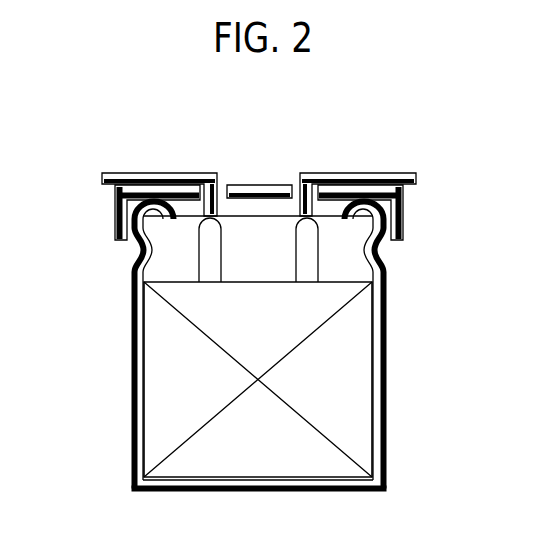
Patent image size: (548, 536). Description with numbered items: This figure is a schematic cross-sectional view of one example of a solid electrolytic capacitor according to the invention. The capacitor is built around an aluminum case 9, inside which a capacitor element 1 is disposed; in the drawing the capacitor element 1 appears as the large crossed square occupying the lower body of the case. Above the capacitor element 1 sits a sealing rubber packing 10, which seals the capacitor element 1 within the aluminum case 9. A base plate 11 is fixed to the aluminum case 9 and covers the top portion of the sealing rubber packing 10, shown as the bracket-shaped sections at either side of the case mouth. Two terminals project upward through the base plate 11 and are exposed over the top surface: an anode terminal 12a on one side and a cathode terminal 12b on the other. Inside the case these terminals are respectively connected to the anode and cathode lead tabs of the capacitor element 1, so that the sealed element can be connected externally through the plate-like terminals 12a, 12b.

The capacitor element 1 is at (168, 373).
The aluminum case 9 is at (381, 313).
The sealing rubber packing 10 is at (342, 252).
The base plate 11 is at (396, 210).
The anode terminal 12a is at (171, 172).
The cathode terminal 12b is at (336, 172).